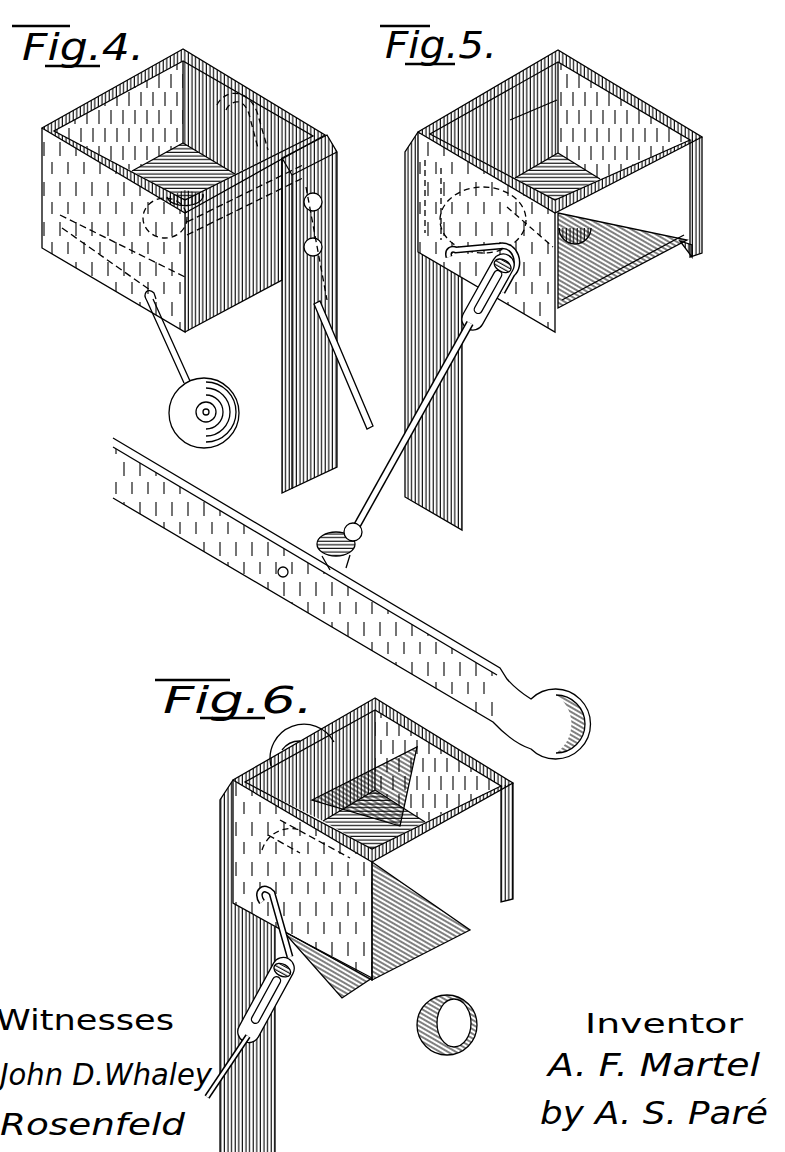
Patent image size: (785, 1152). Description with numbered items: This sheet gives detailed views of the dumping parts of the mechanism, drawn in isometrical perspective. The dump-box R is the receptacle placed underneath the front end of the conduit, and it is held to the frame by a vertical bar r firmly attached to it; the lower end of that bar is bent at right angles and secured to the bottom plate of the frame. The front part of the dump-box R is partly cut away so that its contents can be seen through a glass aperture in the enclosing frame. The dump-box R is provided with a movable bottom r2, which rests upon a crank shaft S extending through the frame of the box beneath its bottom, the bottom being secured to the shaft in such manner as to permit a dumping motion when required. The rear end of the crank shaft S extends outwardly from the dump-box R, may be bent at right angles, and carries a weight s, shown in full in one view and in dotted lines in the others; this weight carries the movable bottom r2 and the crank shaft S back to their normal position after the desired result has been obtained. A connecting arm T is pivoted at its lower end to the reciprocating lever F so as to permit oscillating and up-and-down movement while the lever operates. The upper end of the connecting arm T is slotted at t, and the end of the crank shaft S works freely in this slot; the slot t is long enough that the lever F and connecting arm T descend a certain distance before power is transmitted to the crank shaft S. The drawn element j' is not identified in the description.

In FIG. 4, the dump-box R is at (102, 272).
In FIG. 5, the dump-box R is at (700, 188).
In FIG. 6, the dump-box R is at (515, 850).
In FIG. 4, the vertical bar r is at (285, 348).
In FIG. 5, the vertical bar r is at (458, 483).
In FIG. 6, the vertical bar r is at (222, 976).
In FIG. 4, the movable bottom r2 is at (183, 171).
In FIG. 5, the movable bottom r2 is at (603, 230).
In FIG. 6, the movable bottom r2 is at (376, 894).
In FIG. 4, the weight disk j' is at (178, 184).
In FIG. 5, the weight disk j' is at (585, 273).
In FIG. 6, the weight disk j' is at (455, 1025).
In FIG. 4, the crank shaft S is at (155, 338).
In FIG. 5, the crank shaft S is at (484, 325).
In FIG. 6, the crank shaft S is at (277, 927).
In FIG. 4, the weight s is at (175, 414).
In FIG. 6, the weight s is at (310, 728).
In FIG. 4, the connecting arm T is at (358, 343).
In FIG. 5, the connecting arm T is at (440, 397).
In FIG. 6, the connecting arm T is at (233, 1072).
In FIG. 5, the slot t is at (507, 297).
In FIG. 6, the slot t is at (280, 1012).
In FIG. 5, the reciprocating lever F is at (448, 607).